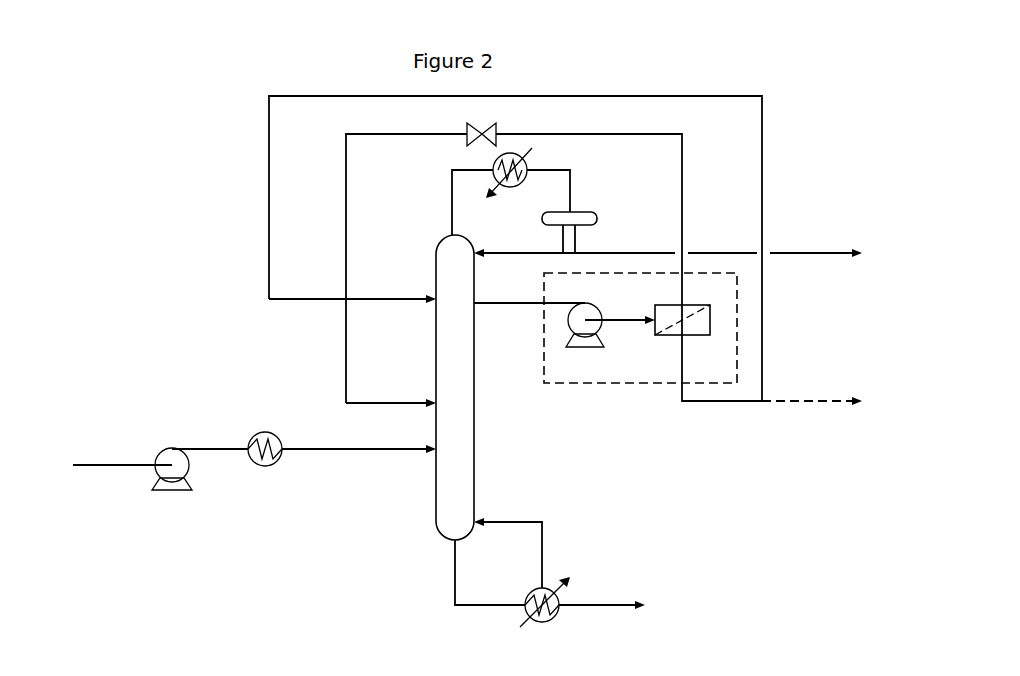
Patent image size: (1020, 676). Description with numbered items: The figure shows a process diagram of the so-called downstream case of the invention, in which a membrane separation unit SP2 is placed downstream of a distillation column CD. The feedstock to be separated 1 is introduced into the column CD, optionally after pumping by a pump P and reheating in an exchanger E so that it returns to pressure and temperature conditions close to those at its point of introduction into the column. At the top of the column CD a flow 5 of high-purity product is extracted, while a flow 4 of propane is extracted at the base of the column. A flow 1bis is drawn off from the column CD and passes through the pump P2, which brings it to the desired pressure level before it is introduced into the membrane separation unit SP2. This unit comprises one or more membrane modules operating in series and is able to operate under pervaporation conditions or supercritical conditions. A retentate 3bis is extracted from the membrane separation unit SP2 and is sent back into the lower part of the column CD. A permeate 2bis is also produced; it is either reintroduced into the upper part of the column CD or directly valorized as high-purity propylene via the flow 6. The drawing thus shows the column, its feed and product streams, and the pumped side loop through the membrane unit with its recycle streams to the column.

The feedstock to be separated 1 is at (122, 465).
The flow drawn off from the column 1bis is at (520, 304).
The permeate 2bis is at (268, 183).
The retentate 3bis is at (347, 231).
The flow of propane 4 is at (605, 605).
The flow of high-purity polypropylene 5 is at (803, 253).
The flow of high-purity propylene 6 is at (805, 401).
The pump P is at (172, 482).
The exchanger E is at (265, 463).
The distillation column CD is at (475, 420).
The pump P2 is at (610, 337).
The membrane separation unit SP2 is at (674, 336).